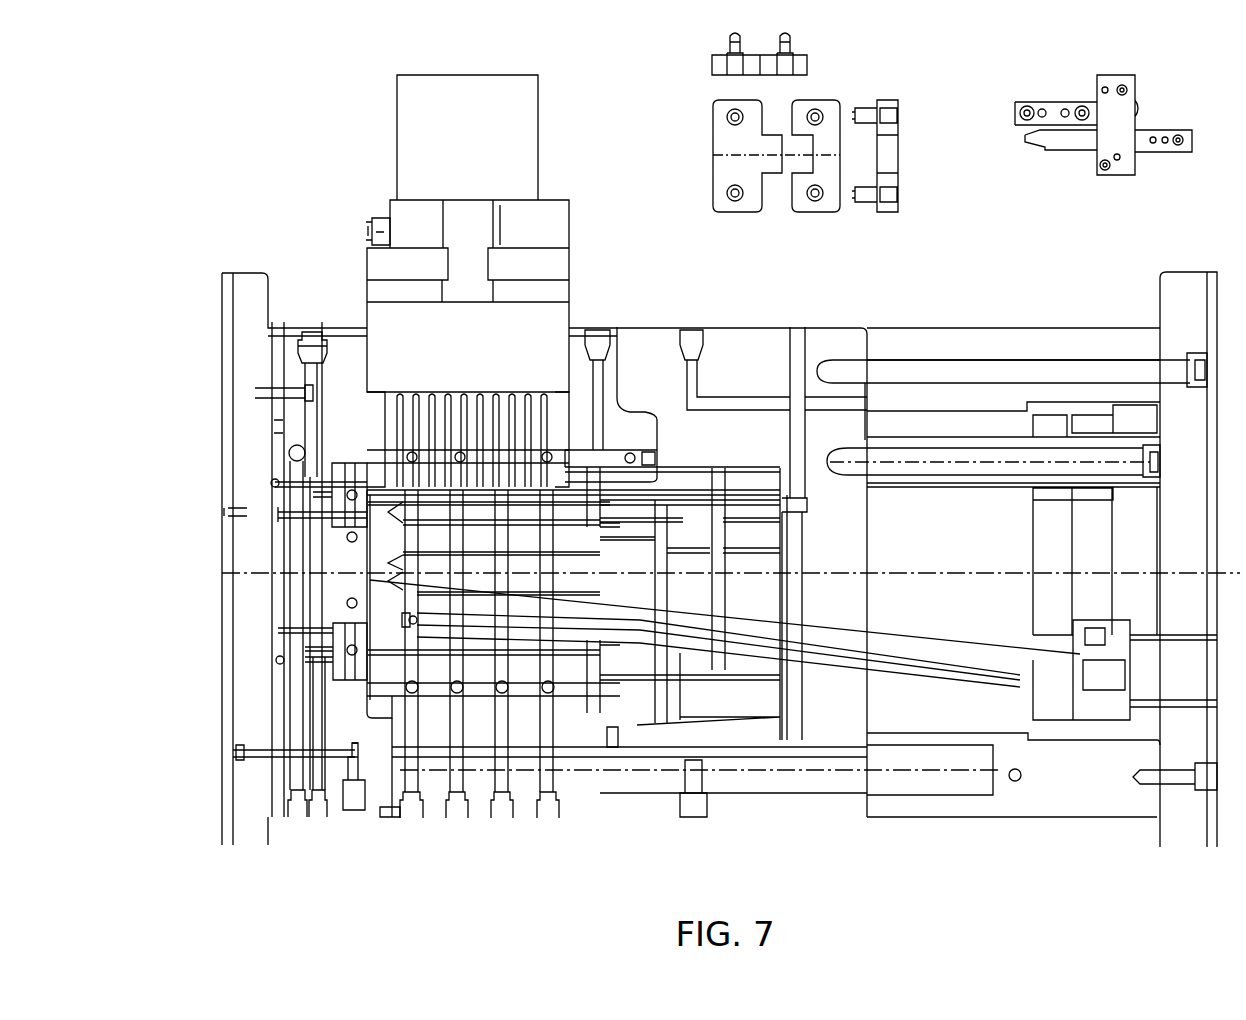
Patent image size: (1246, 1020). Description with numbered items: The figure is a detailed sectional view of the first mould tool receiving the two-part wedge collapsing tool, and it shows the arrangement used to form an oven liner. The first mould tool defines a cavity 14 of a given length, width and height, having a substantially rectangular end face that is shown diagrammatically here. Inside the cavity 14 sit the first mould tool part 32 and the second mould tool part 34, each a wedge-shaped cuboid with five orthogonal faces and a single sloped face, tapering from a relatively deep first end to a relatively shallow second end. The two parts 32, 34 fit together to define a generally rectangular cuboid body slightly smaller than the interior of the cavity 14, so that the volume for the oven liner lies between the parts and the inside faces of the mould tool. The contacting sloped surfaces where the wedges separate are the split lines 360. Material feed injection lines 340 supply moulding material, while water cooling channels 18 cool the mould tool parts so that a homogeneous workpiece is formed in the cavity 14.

The cavity 14 is at (380, 565).
The water cooling channels 18 is at (693, 383).
The first mould tool part 32 is at (383, 603).
The second mould tool part 34 is at (380, 540).
The material feed injection lines 340 is at (565, 470).
The split lines 360 is at (528, 602).